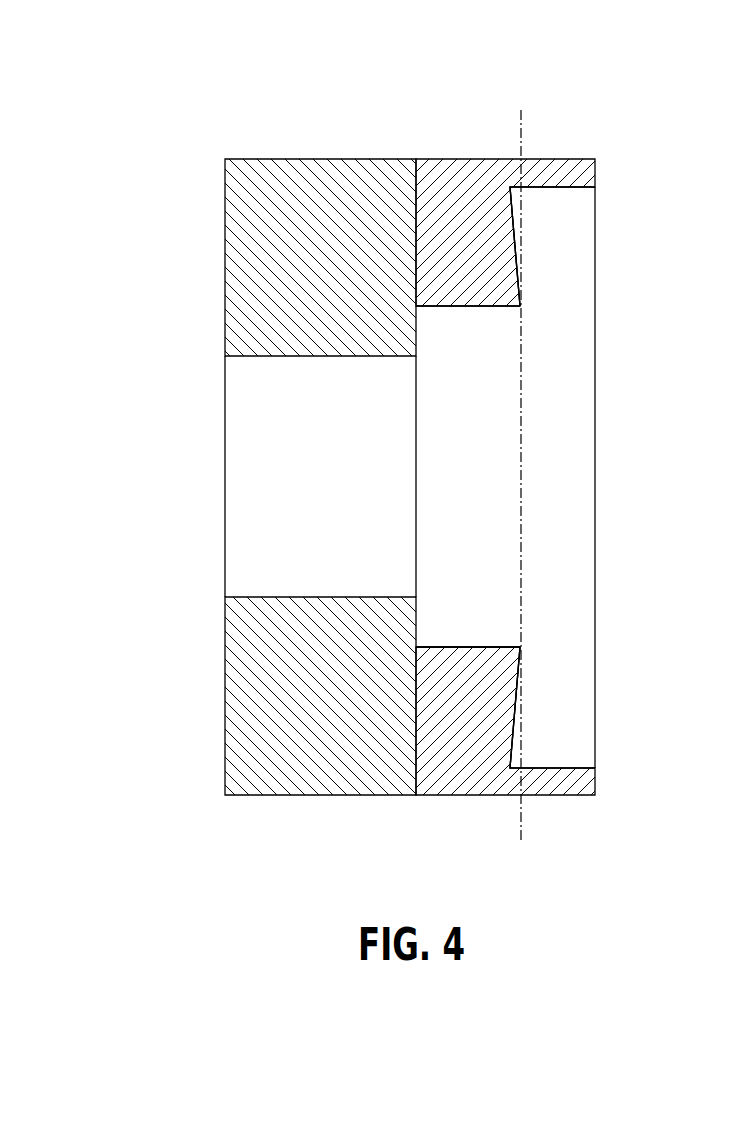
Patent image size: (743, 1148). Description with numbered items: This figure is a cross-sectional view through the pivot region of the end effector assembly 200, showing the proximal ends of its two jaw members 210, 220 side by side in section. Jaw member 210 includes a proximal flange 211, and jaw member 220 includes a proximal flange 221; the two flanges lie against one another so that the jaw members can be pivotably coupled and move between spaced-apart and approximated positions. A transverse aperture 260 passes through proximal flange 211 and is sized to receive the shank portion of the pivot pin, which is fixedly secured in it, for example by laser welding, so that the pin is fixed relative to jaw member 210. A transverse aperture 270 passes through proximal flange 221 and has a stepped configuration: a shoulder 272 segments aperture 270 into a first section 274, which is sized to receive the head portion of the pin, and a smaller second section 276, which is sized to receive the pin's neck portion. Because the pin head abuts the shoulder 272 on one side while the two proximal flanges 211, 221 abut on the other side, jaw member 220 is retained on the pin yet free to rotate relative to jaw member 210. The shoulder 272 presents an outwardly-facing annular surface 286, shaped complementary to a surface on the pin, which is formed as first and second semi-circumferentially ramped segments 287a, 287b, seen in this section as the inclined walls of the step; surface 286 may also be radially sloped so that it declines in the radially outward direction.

The end effector assembly 200 is at (280, 76).
The jaw member 210 is at (237, 148).
The proximal flange 211 is at (265, 261).
The aperture 260 is at (265, 483).
The jaw member 220 is at (559, 150).
The proximal flange 221 is at (466, 177).
The aperture 270 is at (538, 533).
The shoulder 272 is at (521, 647).
The first section 274 is at (551, 433).
The second section 276 is at (487, 478).
The outwardly-facing annular surface 286 is at (518, 218).
The first semi-circumferentially ramped segment 287a is at (521, 292).
The second semi-circumferentially ramped segment 287b is at (512, 716).